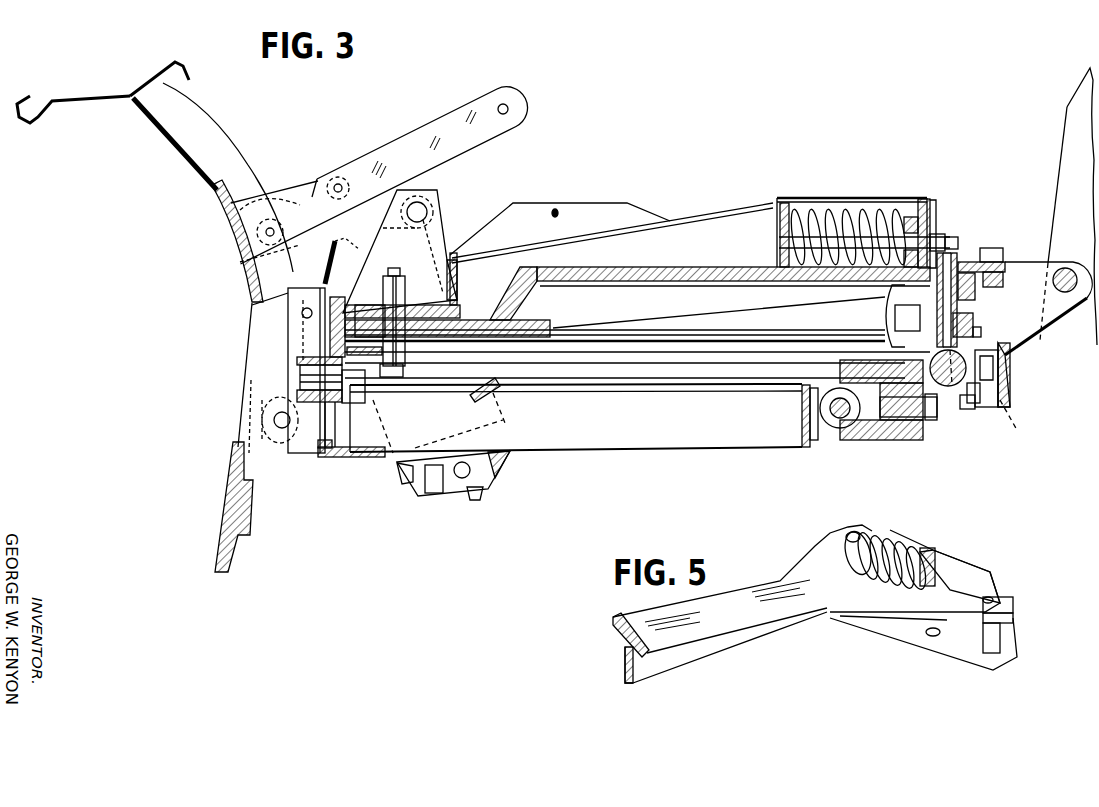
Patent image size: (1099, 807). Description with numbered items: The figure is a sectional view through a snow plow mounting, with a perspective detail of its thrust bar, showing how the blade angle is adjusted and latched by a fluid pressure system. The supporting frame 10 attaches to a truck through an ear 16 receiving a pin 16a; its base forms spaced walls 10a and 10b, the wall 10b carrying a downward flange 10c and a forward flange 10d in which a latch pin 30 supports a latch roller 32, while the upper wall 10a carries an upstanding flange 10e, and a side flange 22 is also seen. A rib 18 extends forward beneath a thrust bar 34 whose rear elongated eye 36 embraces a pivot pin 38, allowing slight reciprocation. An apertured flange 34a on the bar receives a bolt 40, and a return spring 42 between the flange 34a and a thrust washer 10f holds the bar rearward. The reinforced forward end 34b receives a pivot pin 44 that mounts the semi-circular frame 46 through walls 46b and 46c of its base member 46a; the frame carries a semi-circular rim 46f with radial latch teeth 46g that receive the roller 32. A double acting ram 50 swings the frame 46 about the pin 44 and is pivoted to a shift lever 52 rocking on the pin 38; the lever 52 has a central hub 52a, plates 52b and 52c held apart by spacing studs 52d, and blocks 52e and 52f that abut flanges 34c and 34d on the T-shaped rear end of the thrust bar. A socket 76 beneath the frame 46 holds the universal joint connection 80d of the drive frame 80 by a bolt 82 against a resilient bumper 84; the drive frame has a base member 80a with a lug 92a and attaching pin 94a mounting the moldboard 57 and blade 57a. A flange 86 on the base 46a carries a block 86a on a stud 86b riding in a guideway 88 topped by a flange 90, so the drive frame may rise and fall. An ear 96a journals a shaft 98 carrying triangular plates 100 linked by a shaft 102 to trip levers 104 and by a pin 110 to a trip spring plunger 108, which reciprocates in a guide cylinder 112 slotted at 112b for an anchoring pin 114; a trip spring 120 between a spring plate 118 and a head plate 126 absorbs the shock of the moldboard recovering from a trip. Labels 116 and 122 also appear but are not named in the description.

In FIG. 3, the supporting frame 10 is at (1021, 343).
In FIG. 3, the upper wall 10a is at (1000, 259).
In FIG. 3, the lower wall 10b is at (800, 386).
In FIG. 3, the downwardly extending flange 10c is at (1000, 387).
In FIG. 3, the forwardly extending flange 10d is at (973, 402).
In FIG. 3, the upwardly extending flange 10e is at (937, 209).
In FIG. 3, the thrust washer 10f is at (774, 203).
In FIG. 3, the ear 16 is at (1060, 261).
In FIG. 3, the pin 16a is at (1053, 282).
In FIG. 3, the rib 18 is at (538, 338).
In FIG. 3, the flange 22 is at (527, 208).
In FIG. 3, the latch pin 30 is at (1047, 343).
In FIG. 3, the latch roller 32 is at (985, 360).
In FIG. 3, the thrust bar 34 is at (683, 269).
In FIG. 5, the thrust bar 34 is at (765, 613).
In FIG. 3, the apertured flange 34a is at (922, 201).
In FIG. 3, the forward reinforced end 34b is at (481, 306).
In FIG. 5, the flange 34c is at (848, 527).
In FIG. 5, the flange 34d is at (977, 597).
In FIG. 3, the elongated eye 36 is at (970, 272).
In FIG. 3, the pivot pin 38 is at (896, 304).
In FIG. 3, the spring bolt 40 is at (773, 239).
In FIG. 3, the return spring 42 is at (860, 210).
In FIG. 5, the return spring 42 is at (905, 545).
In FIG. 3, the pivot pin 44 is at (393, 308).
In FIG. 3, the semi-circular frame 46 is at (518, 352).
In FIG. 3, the base member 46a is at (347, 320).
In FIG. 3, the wall 46b is at (458, 262).
In FIG. 3, the wall 46c is at (396, 340).
In FIG. 3, the semi-circular rim 46f is at (945, 390).
In FIG. 3, the latch teeth 46g is at (1007, 394).
In FIG. 3, the double acting ram 50 is at (722, 322).
In FIG. 3, the shift lever 52 is at (981, 324).
In FIG. 3, the central hub 52a is at (972, 312).
In FIG. 5, the central hub 52a is at (928, 622).
In FIG. 5, the elongated plate 52b is at (968, 647).
In FIG. 5, the elongated plate 52c is at (1015, 620).
In FIG. 5, the spacing studs 52d is at (1005, 633).
In FIG. 5, the block 52e is at (862, 530).
In FIG. 5, the block 52f is at (1008, 607).
In FIG. 3, the moldboard 57 is at (190, 160).
In FIG. 3, the snow plow blade 57a is at (227, 512).
In FIG. 3, the socket 76 is at (895, 440).
In FIG. 3, the drive frame 80 is at (685, 440).
In FIG. 3, the transverse base member 80a is at (355, 456).
In FIG. 3, the universal joint connection 80d is at (840, 420).
In FIG. 3, the bolt 82 is at (928, 420).
In FIG. 3, the resilient bumper 84 is at (905, 441).
In FIG. 3, the downwardly extending flange 86 is at (352, 407).
In FIG. 3, the block 86a is at (306, 372).
In FIG. 3, the mounting stud 86b is at (367, 378).
In FIG. 3, the guideway 88 is at (300, 313).
In FIG. 3, the flange 90 is at (333, 243).
In FIG. 3, the lug 92a is at (262, 409).
In FIG. 3, the attaching pin 94a is at (275, 412).
In FIG. 3, the ear 96a is at (433, 236).
In FIG. 3, the shaft 98 is at (430, 211).
In FIG. 3, the triangular plates 100 is at (490, 137).
In FIG. 3, the shaft 102 is at (508, 108).
In FIG. 3, the trip levers 104 is at (452, 122).
In FIG. 3, the trip spring plunger 108 is at (340, 220).
In FIG. 3, the transverse pin 110 is at (328, 170).
In FIG. 3, the guide cylinder 112 is at (480, 498).
In FIG. 3, the elongated slot 112b is at (474, 502).
In FIG. 3, the pin 114 is at (461, 478).
In FIG. 3, the stop 116 is at (497, 476).
In FIG. 3, the spring plate 118 is at (400, 471).
In FIG. 3, the trip spring 120 is at (483, 387).
In FIG. 3, the block 122 is at (425, 488).
In FIG. 3, the head plate 126 is at (256, 267).